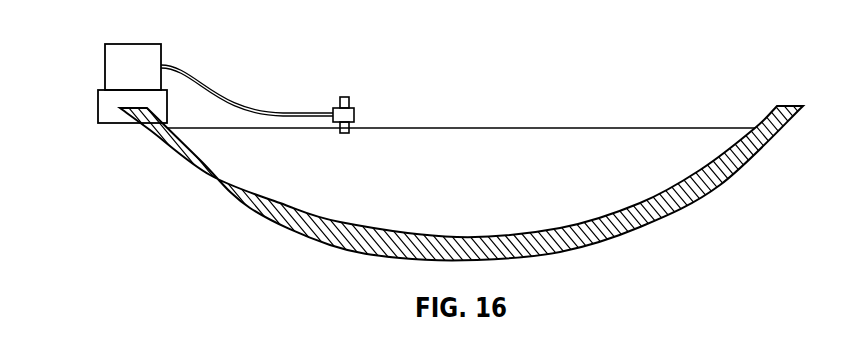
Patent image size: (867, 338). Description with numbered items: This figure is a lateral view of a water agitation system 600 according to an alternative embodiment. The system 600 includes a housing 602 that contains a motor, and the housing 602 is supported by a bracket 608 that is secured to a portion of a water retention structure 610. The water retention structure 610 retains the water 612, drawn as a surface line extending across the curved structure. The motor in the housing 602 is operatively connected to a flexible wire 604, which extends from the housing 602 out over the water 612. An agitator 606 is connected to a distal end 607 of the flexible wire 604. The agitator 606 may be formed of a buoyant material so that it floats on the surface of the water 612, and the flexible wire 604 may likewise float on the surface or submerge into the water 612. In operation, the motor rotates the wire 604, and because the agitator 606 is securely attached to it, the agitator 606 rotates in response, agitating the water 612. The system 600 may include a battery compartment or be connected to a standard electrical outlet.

The water agitation system 600 is at (121, 44).
The housing 602 is at (105, 66).
The flexible wire 604 is at (214, 82).
The agitator 606 is at (355, 114).
The distal end 607 is at (340, 107).
The bracket 608 is at (98, 108).
The water retention structure 610 is at (163, 157).
The water 612 is at (512, 128).